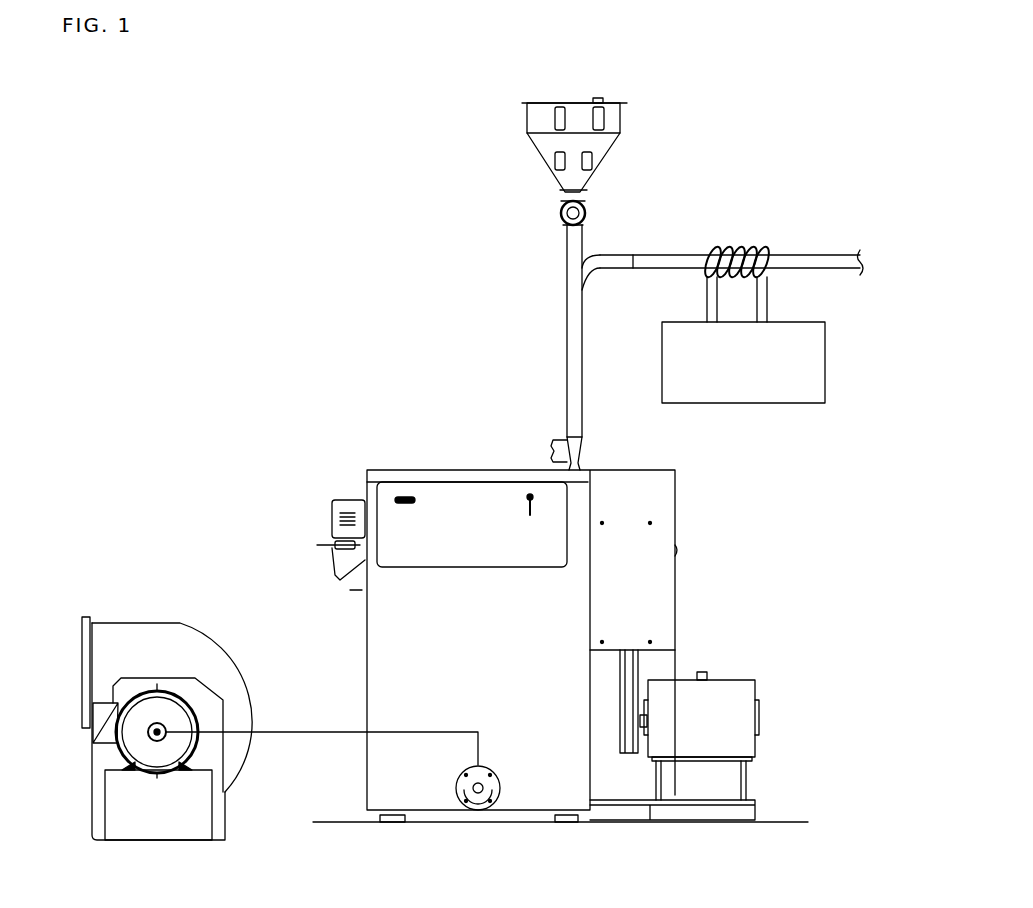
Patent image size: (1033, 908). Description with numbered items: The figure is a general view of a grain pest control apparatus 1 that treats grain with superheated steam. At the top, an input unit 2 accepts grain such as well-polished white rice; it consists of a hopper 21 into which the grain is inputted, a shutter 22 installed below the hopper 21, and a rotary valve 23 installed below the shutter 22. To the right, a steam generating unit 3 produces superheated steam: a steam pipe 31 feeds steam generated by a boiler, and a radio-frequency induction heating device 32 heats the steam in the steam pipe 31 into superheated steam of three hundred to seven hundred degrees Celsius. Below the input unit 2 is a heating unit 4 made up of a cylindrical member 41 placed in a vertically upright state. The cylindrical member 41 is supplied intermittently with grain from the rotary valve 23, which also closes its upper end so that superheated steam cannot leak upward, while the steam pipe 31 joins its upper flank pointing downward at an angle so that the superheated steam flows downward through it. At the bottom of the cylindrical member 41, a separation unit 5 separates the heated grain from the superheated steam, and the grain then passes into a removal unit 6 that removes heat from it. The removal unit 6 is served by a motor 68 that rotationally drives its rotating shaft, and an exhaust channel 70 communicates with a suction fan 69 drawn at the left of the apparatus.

The grain pest control apparatus 1 is at (355, 152).
The input unit 2 is at (582, 161).
The hopper 21 is at (537, 128).
The shutter 22 is at (543, 195).
The rotary valve 23 is at (560, 222).
The steam generating unit 3 is at (724, 295).
The steam pipe 31 is at (793, 262).
The radio-frequency induction heating device 32 is at (757, 390).
The heating unit 4 is at (507, 331).
The cylindrical member 41 is at (567, 352).
The separation unit 5 is at (530, 429).
The removal unit 6 is at (371, 421).
The motor 68 is at (719, 692).
The suction fan 69 is at (125, 638).
The exhaust channel 70 is at (347, 727).